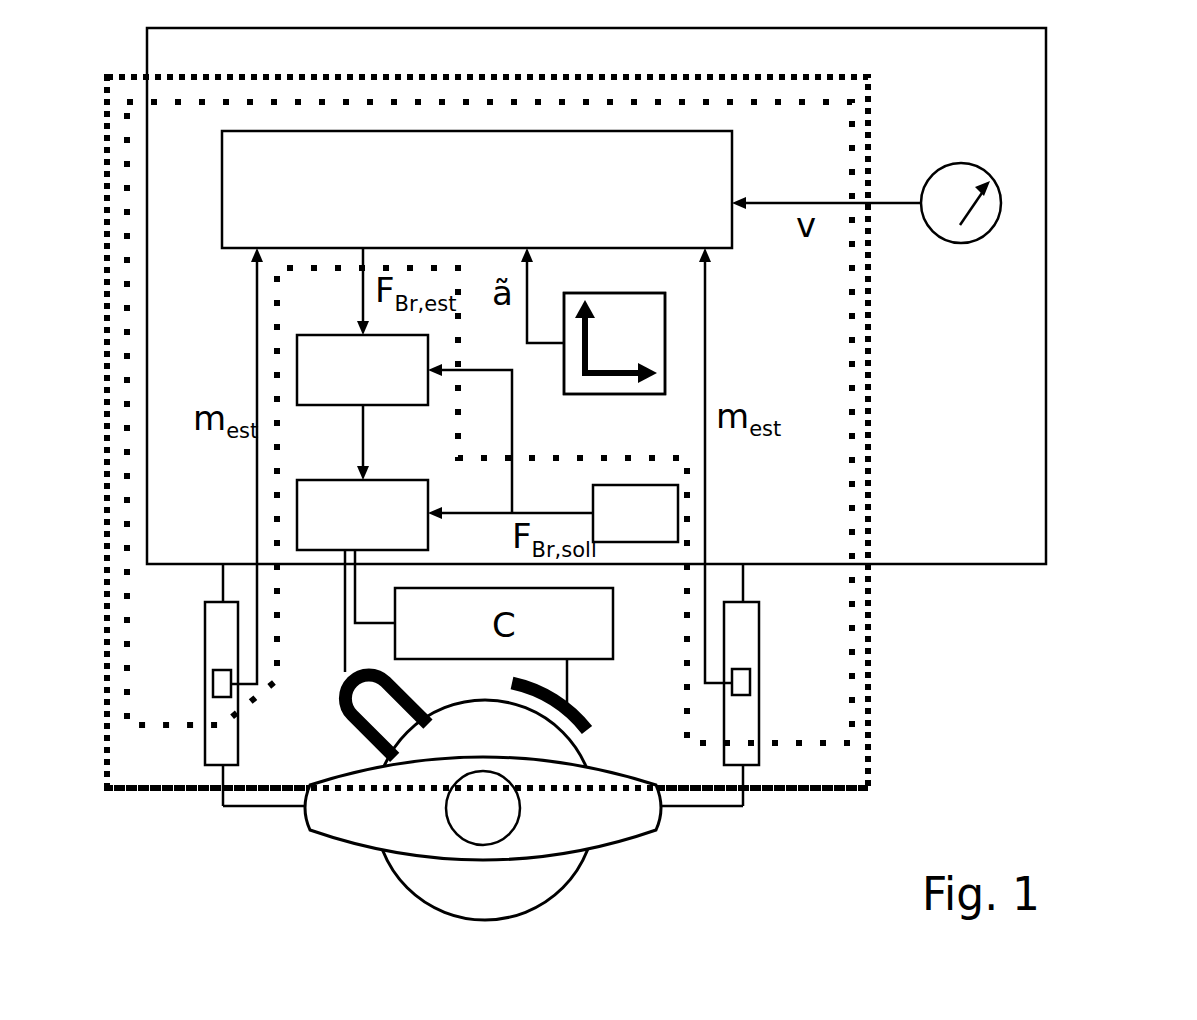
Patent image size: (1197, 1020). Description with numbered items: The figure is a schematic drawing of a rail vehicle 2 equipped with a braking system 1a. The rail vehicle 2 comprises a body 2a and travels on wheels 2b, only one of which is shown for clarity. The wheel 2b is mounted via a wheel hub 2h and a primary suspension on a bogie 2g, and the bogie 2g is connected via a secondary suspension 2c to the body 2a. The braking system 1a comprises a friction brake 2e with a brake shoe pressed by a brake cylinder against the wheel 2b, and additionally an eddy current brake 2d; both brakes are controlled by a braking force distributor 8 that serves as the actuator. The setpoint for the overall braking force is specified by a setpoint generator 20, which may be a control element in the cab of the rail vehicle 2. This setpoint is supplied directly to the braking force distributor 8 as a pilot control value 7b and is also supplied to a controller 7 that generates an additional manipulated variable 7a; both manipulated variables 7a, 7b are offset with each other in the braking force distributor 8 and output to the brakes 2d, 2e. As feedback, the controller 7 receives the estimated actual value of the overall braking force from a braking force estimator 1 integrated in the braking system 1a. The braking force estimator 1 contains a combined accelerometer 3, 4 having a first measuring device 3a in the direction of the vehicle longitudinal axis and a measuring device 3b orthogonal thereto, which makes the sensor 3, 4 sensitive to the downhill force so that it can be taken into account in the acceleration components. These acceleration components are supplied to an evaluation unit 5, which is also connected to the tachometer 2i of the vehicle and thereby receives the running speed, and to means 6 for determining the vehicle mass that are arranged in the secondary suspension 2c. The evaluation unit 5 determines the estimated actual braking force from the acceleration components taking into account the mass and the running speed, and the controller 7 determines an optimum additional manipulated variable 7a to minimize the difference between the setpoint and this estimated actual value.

The braking force estimator 1 is at (848, 147).
The braking system 1a is at (867, 418).
The rail vehicle 2 is at (1033, 655).
The body 2a is at (982, 564).
The wheel 2b is at (570, 880).
The secondary suspension 2c is at (205, 645).
The eddy current brake 2d is at (333, 671).
The friction brake 2e is at (580, 710).
The bogie 2g is at (353, 850).
The wheel hub 2h is at (483, 808).
The tachometer 2i is at (941, 163).
The combined accelerometer 3 is at (676, 367).
The combined accelerometer 4 is at (614, 343).
The first measuring device 3a is at (612, 375).
The measuring device 3b is at (590, 334).
The evaluation unit 5 is at (477, 189).
The means for determining the mass 6 is at (215, 700).
The controller 7 is at (362, 370).
The additional manipulated variable 7a is at (337, 442).
The pilot control value 7b is at (510, 441).
The braking force distributor 8 is at (362, 515).
The setpoint generator 20 is at (635, 513).